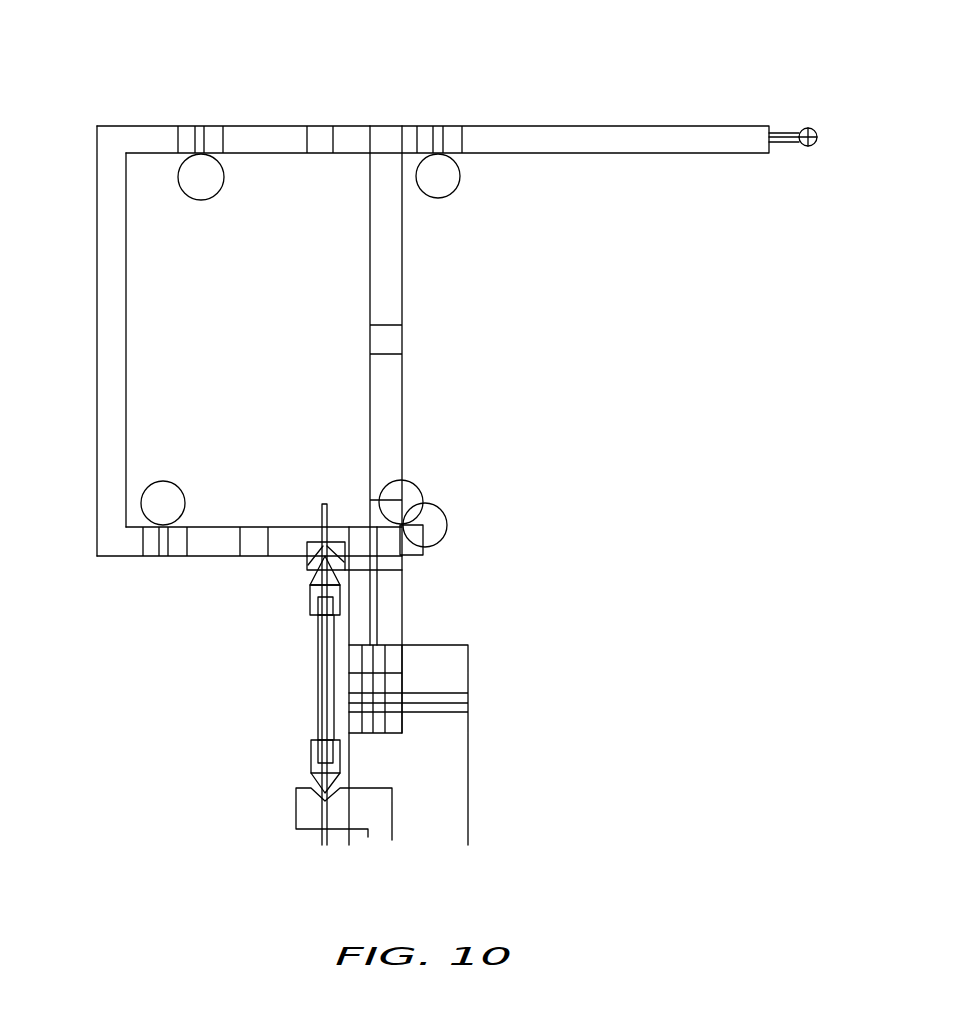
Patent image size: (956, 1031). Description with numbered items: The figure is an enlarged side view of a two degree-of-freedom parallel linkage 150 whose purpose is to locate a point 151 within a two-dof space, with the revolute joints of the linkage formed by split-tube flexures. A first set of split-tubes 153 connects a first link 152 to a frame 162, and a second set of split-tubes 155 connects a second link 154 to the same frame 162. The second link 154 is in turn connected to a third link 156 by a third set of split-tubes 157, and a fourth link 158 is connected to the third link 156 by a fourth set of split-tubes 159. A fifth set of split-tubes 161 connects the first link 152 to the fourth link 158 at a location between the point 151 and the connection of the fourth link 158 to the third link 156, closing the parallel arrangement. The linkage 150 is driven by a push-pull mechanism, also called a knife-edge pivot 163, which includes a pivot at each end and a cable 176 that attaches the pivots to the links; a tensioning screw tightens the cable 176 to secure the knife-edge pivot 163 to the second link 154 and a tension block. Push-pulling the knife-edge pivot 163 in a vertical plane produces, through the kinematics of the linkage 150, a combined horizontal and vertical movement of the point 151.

The two degree-of-freedom parallel linkage 150 is at (78, 102).
The point 151 is at (818, 135).
The first link 152 is at (403, 300).
The first set of split-tubes 153 is at (445, 514).
The second link 154 is at (253, 526).
The second set of split-tubes 155 is at (410, 483).
The third link 156 is at (131, 289).
The third set of split-tubes 157 is at (170, 483).
The fourth link 158 is at (553, 125).
The fourth set of split-tubes 159 is at (214, 195).
The fifth set of split-tubes 161 is at (460, 180).
The frame 162 is at (403, 590).
The push-pull mechanism (knife-edge pivot) 163 is at (285, 685).
The cable 176 is at (327, 505).